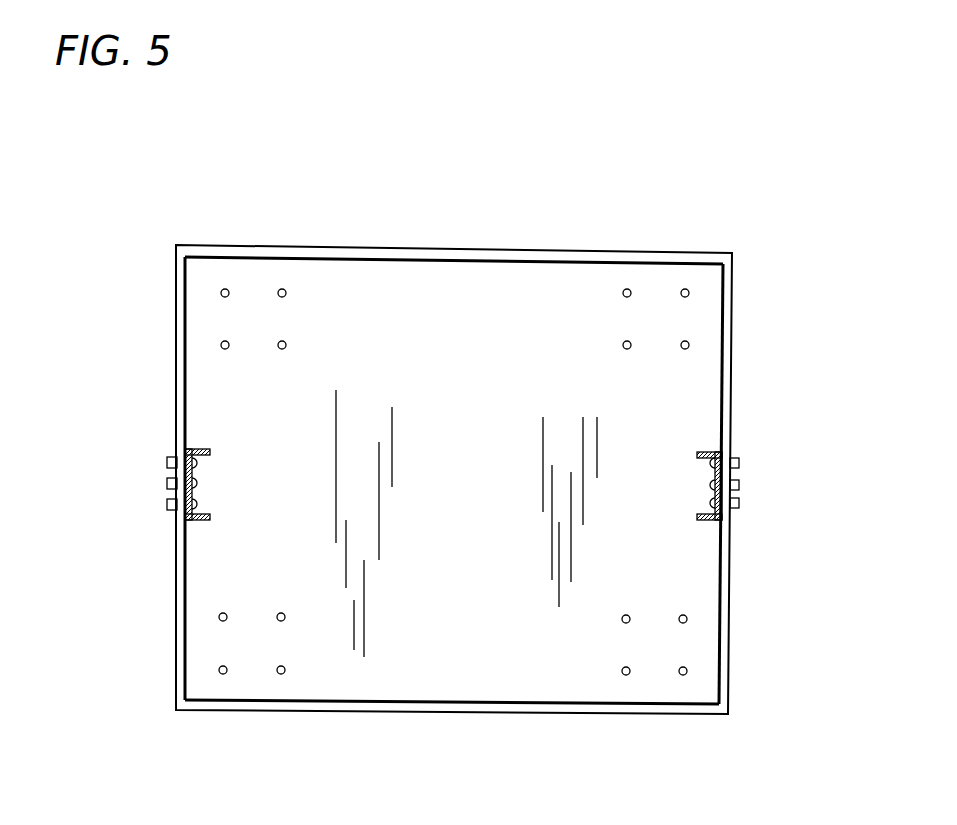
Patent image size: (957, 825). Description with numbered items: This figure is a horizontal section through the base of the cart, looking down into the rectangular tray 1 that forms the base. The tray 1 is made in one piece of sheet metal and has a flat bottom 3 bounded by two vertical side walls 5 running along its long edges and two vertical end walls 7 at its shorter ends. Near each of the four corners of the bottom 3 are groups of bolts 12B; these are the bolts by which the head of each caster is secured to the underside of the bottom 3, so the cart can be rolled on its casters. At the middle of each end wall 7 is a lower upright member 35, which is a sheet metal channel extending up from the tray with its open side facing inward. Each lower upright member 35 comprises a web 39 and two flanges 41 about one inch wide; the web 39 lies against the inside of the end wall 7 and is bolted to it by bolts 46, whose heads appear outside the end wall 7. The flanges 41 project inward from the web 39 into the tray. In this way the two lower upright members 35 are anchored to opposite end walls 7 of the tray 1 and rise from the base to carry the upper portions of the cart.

The rectangular tray 1 is at (172, 240).
The flat bottom 3 is at (478, 484).
The vertical side walls 5 is at (434, 247).
The vertical end walls 7 is at (175, 632).
The bolts 12B is at (283, 286).
The lower upright member 35 is at (207, 445).
The web 39 is at (193, 491).
The flanges 41 is at (210, 452).
The bolts 46 is at (167, 504).